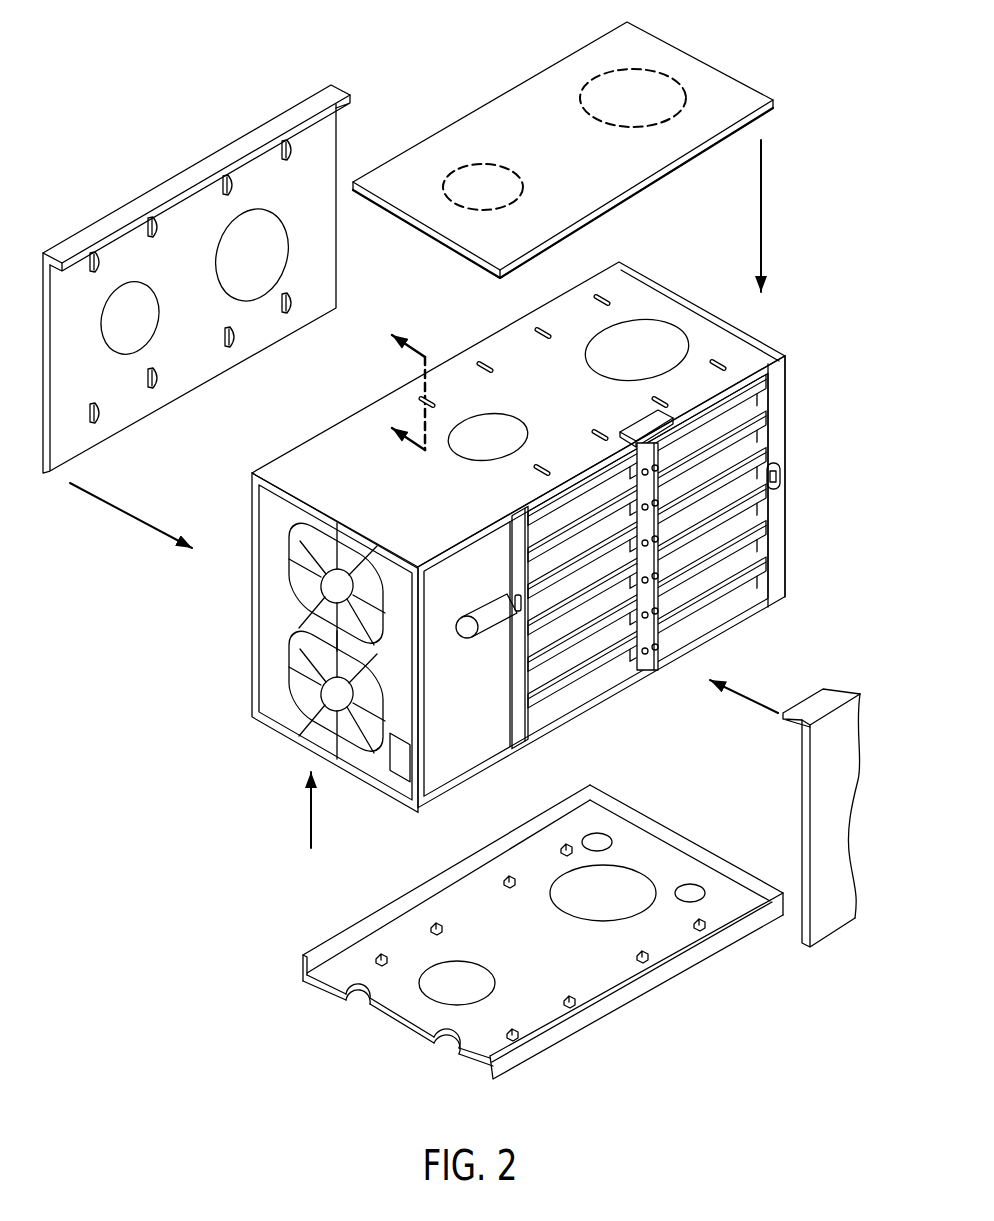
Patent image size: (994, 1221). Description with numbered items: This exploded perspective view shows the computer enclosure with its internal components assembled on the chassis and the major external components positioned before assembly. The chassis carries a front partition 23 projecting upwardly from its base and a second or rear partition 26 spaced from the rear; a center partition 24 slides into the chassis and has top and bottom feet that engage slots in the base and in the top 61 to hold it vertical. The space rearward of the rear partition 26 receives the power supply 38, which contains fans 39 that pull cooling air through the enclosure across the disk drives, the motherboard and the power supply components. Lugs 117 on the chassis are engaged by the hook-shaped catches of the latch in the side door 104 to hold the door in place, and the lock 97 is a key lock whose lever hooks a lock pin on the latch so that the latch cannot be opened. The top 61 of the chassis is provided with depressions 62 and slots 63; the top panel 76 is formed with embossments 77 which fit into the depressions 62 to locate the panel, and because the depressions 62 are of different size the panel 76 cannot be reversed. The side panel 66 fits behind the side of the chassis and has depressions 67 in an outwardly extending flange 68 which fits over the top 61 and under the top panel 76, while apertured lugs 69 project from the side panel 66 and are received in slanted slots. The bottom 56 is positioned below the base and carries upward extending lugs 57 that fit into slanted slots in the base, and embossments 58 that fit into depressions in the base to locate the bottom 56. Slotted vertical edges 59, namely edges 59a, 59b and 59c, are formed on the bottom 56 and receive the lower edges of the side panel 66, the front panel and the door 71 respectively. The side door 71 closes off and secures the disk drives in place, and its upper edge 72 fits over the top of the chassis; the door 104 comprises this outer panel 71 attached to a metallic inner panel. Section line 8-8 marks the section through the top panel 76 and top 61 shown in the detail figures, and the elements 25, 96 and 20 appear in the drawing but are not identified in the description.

The top panel 76 is at (559, 88).
The embossments 77 is at (603, 124).
The flange 68 is at (198, 178).
The apertured lugs 69 is at (292, 161).
The depressions 67 is at (216, 280).
The side panel 66 is at (70, 376).
The top 61 is at (421, 514).
The section line 8- 8 is at (400, 383).
The slots 63 is at (545, 336).
The depressions 62 is at (513, 425).
The bracket 25 is at (649, 421).
The front partition 23 is at (778, 403).
The lugs 117 is at (781, 479).
The power supply 38 is at (306, 603).
The fans 39 is at (292, 674).
The handle rod 96 is at (496, 637).
The lock 97 is at (461, 638).
The rear partition 26 is at (533, 745).
The center partition 24 is at (652, 627).
The side door 71 is at (825, 784).
The upper edge 72 is at (810, 706).
The side door 104 is at (862, 773).
The bottom 56 is at (420, 1018).
The slotted vertical edges 59 is at (633, 813).
The slotted vertical edge 59a is at (300, 969).
The slotted vertical edge 59b is at (710, 854).
The slotted vertical edge 59c is at (573, 1034).
The apertures and notches 20 is at (612, 846).
The embossments 58 is at (571, 927).
The lugs 57 is at (437, 939).